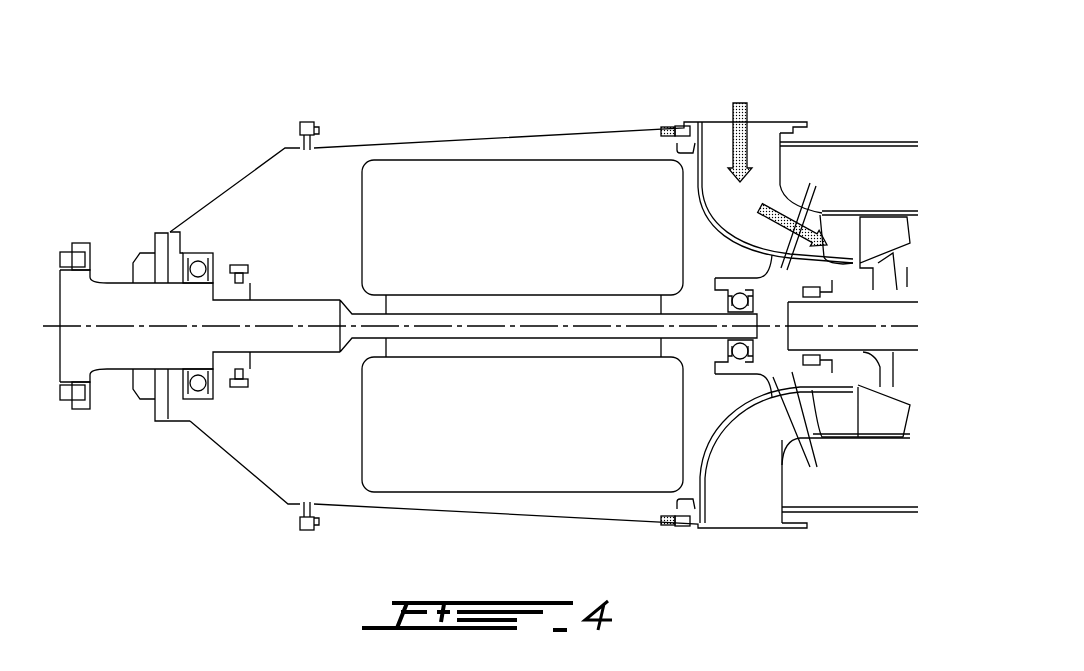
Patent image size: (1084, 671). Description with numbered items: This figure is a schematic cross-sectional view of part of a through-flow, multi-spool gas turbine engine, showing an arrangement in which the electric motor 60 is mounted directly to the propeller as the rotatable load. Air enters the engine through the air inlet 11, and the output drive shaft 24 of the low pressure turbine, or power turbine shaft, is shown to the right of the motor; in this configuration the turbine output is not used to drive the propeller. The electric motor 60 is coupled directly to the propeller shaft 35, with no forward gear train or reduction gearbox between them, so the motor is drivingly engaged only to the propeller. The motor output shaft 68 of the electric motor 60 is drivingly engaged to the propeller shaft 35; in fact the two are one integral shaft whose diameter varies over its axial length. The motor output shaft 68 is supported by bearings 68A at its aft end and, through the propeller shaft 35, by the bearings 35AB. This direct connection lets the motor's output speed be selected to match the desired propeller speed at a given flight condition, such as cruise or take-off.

The air inlet 11 is at (765, 113).
The output drive shaft 24 is at (842, 297).
The propeller shaft 35 is at (106, 348).
The bearings 35AB is at (207, 236).
The electric motor 60 is at (468, 176).
The motor output shaft 68 is at (360, 314).
The bearings 68A is at (740, 270).